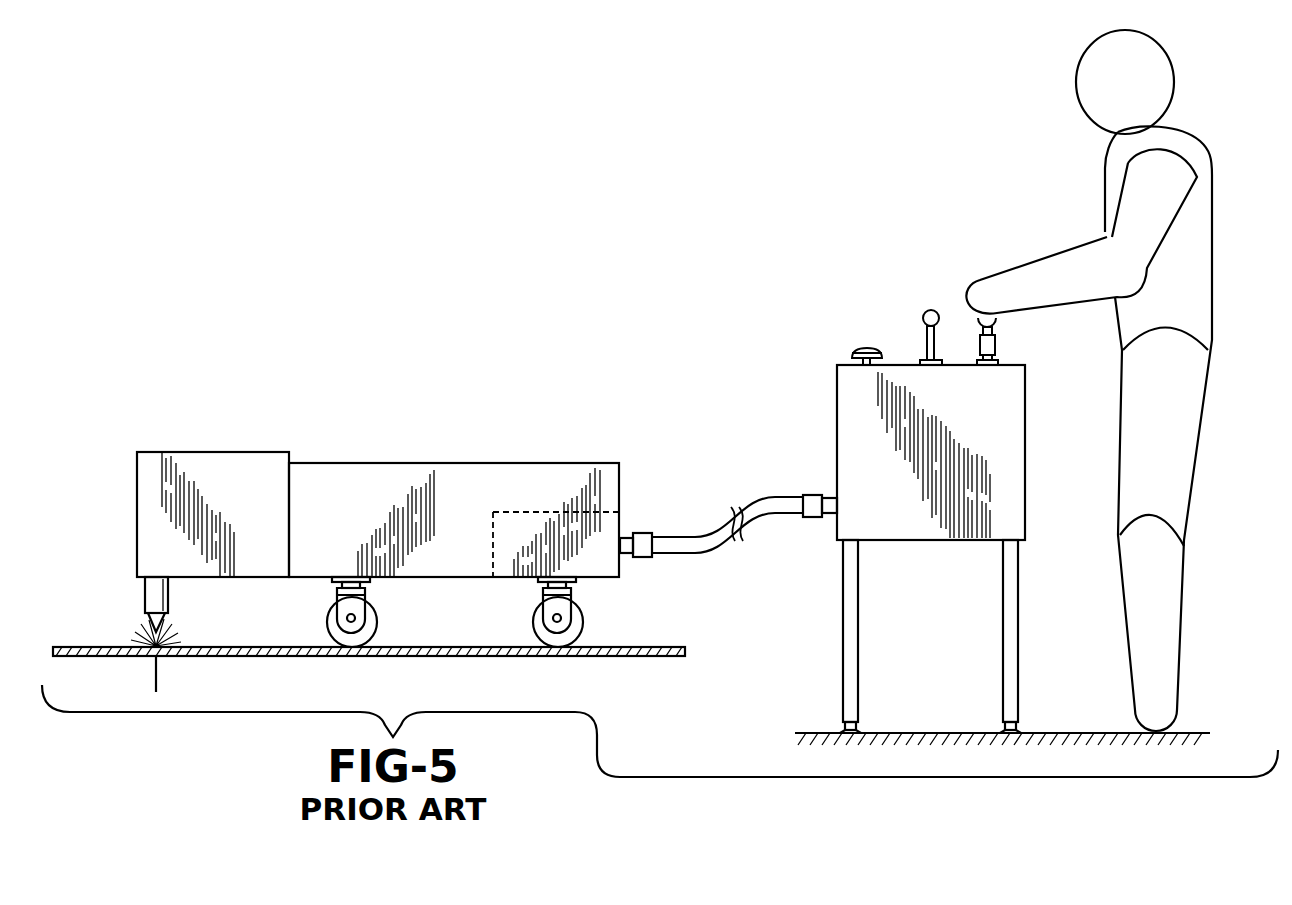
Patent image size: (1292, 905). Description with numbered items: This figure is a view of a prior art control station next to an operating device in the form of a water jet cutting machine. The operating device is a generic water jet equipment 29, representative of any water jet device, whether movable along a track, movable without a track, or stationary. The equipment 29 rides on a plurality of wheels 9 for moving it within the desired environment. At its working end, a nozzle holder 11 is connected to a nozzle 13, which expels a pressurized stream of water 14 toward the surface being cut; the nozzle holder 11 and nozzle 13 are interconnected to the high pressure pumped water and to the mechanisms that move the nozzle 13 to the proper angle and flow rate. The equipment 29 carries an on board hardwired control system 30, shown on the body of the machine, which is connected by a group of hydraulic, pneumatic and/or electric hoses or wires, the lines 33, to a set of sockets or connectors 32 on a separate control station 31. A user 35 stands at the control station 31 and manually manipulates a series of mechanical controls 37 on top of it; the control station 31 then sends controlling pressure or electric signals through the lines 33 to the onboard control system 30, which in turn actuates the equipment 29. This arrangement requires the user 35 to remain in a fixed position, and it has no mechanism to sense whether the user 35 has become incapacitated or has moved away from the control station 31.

The wheels 9 is at (328, 612).
The nozzle holder 11 is at (145, 598).
The nozzle 13 is at (142, 629).
The pressurized stream of water 14 is at (155, 674).
The generic water jet equipment 29 is at (343, 458).
The on board hardwired control system 30 is at (518, 508).
The control station 31 is at (833, 405).
The sockets or connectors 32 is at (832, 496).
The lines 33 is at (717, 528).
The user 35 is at (1192, 135).
The mechanical controls 37 is at (867, 348).